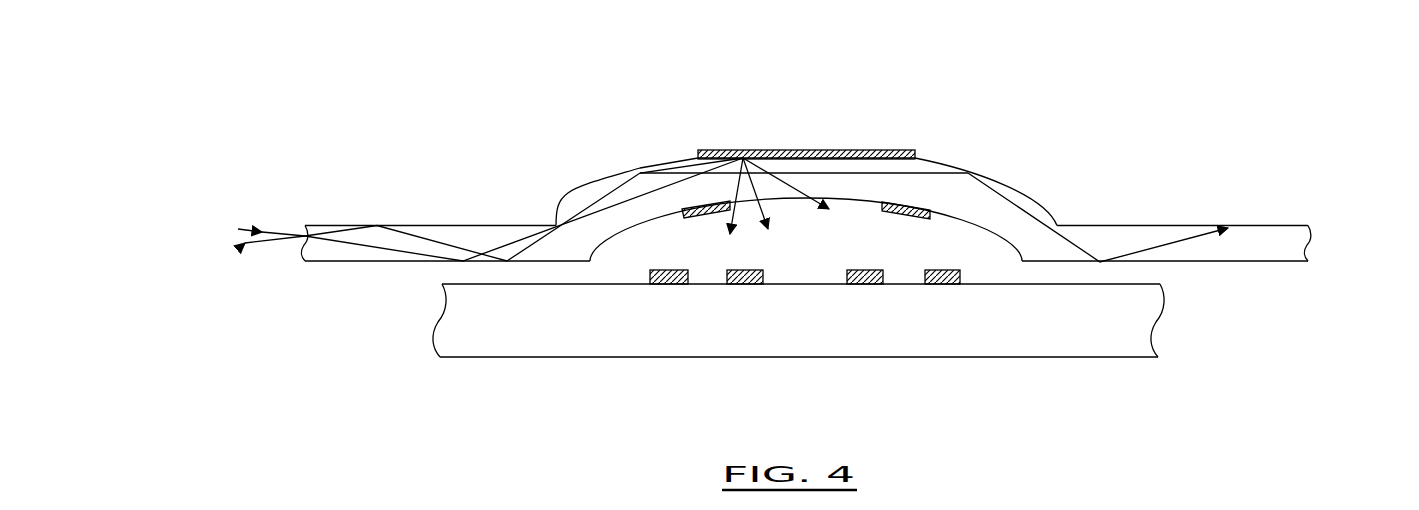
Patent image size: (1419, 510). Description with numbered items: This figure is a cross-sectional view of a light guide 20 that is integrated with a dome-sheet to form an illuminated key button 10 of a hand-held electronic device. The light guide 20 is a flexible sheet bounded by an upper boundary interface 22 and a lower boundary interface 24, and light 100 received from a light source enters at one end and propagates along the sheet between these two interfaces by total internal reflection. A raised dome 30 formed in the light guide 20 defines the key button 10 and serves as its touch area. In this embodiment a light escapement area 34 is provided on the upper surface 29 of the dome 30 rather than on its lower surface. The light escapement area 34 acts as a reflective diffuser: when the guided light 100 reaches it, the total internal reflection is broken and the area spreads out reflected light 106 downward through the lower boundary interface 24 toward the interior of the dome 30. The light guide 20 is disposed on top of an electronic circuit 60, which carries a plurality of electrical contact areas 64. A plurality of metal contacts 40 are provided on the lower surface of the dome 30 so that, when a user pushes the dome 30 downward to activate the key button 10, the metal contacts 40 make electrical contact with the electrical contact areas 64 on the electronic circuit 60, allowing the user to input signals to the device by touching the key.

The key button 10 is at (842, 100).
The light guide 20 is at (1258, 240).
The upper boundary interface 22 is at (405, 223).
The lower boundary interface 24 is at (388, 263).
The upper surface of the dome 29 is at (605, 185).
The dome 30 is at (1013, 195).
The light escapement area 34 is at (880, 148).
The metal contacts 40 is at (707, 218).
The electronic circuit 60 is at (1148, 303).
The electrical contact areas 64 is at (662, 270).
The light 100 is at (238, 227).
The reflected light 106 is at (765, 208).